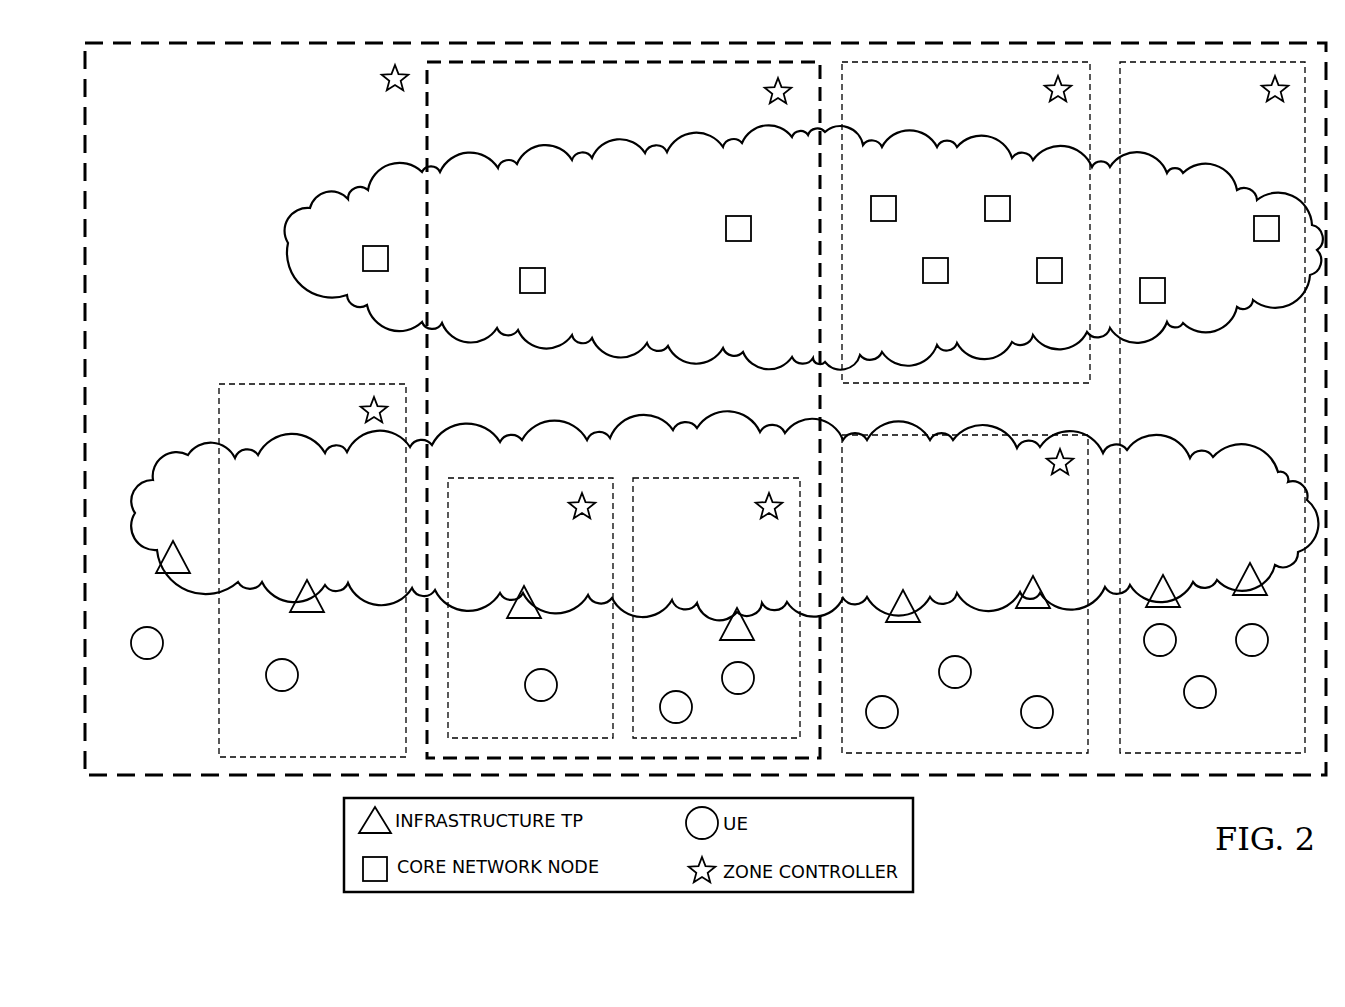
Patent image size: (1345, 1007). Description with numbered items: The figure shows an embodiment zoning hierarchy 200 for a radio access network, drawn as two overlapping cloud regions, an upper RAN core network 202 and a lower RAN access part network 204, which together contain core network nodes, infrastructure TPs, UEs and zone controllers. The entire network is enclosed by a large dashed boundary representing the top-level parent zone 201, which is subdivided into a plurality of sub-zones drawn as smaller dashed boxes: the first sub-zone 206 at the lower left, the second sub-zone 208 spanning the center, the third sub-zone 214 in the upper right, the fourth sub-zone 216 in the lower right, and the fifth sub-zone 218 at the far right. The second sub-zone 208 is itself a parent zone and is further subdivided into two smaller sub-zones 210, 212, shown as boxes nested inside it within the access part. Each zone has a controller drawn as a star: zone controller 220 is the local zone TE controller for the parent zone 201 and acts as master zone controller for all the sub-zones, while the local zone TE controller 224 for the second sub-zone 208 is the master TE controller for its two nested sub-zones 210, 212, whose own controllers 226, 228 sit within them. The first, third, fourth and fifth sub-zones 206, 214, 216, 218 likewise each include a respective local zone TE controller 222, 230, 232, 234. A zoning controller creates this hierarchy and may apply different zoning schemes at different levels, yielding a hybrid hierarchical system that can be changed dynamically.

The zoning hierarchy 200 is at (1105, 824).
The zone 0 201 is at (188, 108).
The RAN core network 202 is at (309, 206).
The RAN access part network 204 is at (186, 456).
The zone 1 206 is at (365, 695).
The zone 2 208 is at (498, 108).
The zone 2a 210 is at (510, 665).
The zone 2b 212 is at (696, 655).
The zone 3 214 is at (902, 108).
The zone 4 216 is at (1058, 667).
The zone 5 218 is at (1285, 705).
The zone controller 220 is at (385, 89).
The local zone TE controller 222 is at (376, 424).
The local zone TE controller 224 is at (768, 101).
The zone controller of zone 2a 226 is at (580, 520).
The zone controller of zone 2b 228 is at (767, 520).
The local zone TE controller 230 is at (1048, 98).
The local zone TE controller 232 is at (1056, 477).
The local zone TE controller 234 is at (1265, 100).